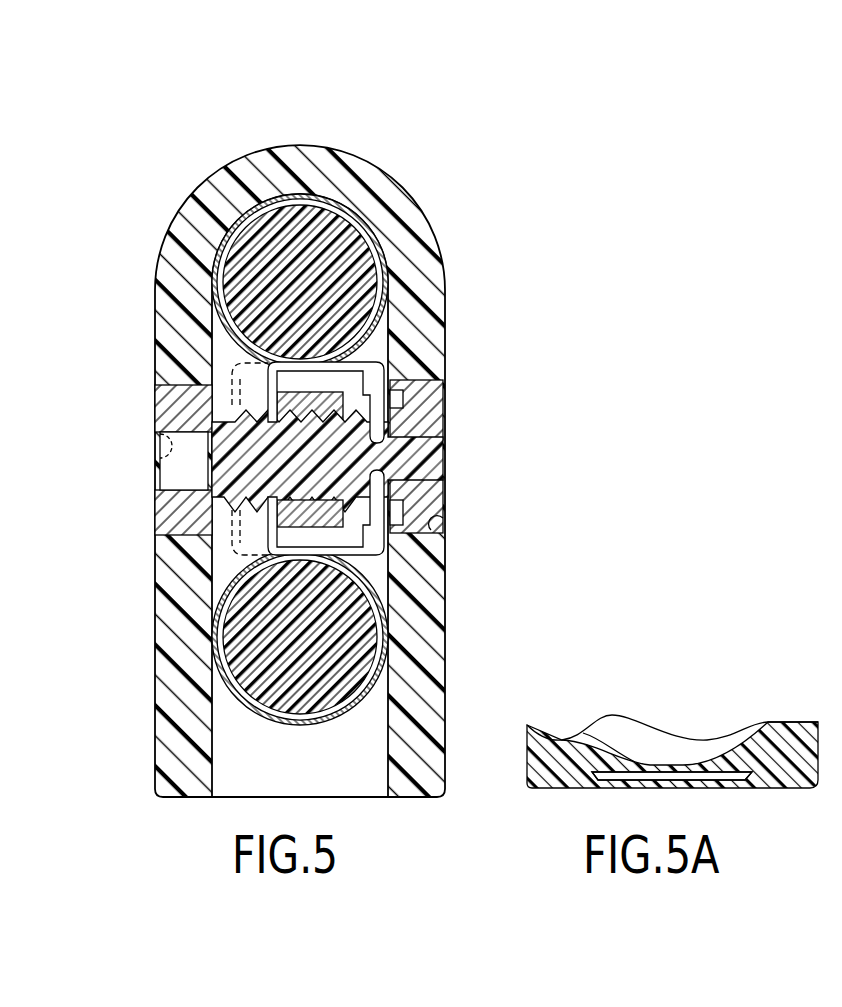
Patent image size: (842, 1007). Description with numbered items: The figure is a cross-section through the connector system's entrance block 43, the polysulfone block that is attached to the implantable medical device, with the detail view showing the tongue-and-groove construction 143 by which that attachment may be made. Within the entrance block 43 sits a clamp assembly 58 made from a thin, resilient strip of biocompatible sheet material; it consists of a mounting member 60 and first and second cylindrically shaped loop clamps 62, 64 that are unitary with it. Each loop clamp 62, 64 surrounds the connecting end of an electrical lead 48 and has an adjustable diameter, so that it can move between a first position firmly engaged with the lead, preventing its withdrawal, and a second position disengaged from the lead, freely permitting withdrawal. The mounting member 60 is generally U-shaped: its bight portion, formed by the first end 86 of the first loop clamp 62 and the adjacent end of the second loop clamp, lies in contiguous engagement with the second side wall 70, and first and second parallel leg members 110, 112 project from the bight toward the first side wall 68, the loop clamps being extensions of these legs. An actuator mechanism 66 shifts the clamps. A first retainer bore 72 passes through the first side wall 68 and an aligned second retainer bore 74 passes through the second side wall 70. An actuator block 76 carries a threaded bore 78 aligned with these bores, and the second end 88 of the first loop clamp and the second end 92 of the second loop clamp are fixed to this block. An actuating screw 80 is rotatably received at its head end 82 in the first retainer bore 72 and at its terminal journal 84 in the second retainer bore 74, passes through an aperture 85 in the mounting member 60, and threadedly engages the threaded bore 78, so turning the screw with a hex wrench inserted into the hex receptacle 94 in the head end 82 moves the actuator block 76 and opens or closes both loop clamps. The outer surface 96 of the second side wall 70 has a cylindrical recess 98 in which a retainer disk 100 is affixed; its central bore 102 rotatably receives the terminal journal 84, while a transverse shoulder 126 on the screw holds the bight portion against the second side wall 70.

In FIG. 5, the entrance block 43 is at (452, 575).
In FIG. 5A, the entrance block 43 is at (530, 790).
In FIG. 5, the electrical lead 48 is at (352, 270).
In FIG. 5, the clamp assembly 58 is at (420, 356).
In FIG. 5, the mounting member 60 is at (420, 402).
In FIG. 5, the first loop clamp 62 is at (355, 205).
In FIG. 5, the second loop clamp 64 is at (372, 720).
In FIG. 5, the actuator mechanism 66 is at (385, 460).
In FIG. 5, the first side wall 68 is at (190, 312).
In FIG. 5, the second side wall 70 is at (433, 668).
In FIG. 5, the first retainer bore 72 is at (175, 415).
In FIG. 5, the second retainer bore 74 is at (395, 445).
In FIG. 5, the actuator block 76 is at (240, 396).
In FIG. 5, the threaded bore 78 is at (198, 460).
In FIG. 5, the actuating screw 80 is at (150, 520).
In FIG. 5, the head end 82 is at (180, 502).
In FIG. 5, the terminal journal 84 is at (425, 456).
In FIG. 5, the aperture 85 is at (326, 402).
In FIG. 5, the first end of first loop clamp 86 is at (403, 400).
In FIG. 5, the second end of first loop clamp 88 is at (232, 382).
In FIG. 5, the second end of second loop clamp 92 is at (250, 550).
In FIG. 5, the hex receptacle 94 is at (165, 447).
In FIG. 5, the outer surface 96 is at (446, 694).
In FIG. 5, the cylindrical recess 98 is at (437, 525).
In FIG. 5, the retainer disk 100 is at (428, 500).
In FIG. 5, the central bore 102 is at (402, 470).
In FIG. 5, the first leg member 110 is at (398, 345).
In FIG. 5, the second leg member 112 is at (395, 590).
In FIG. 5, the transverse shoulder 126 is at (326, 512).
In FIG. 5A, the tongue-and-groove construction 143 is at (726, 784).